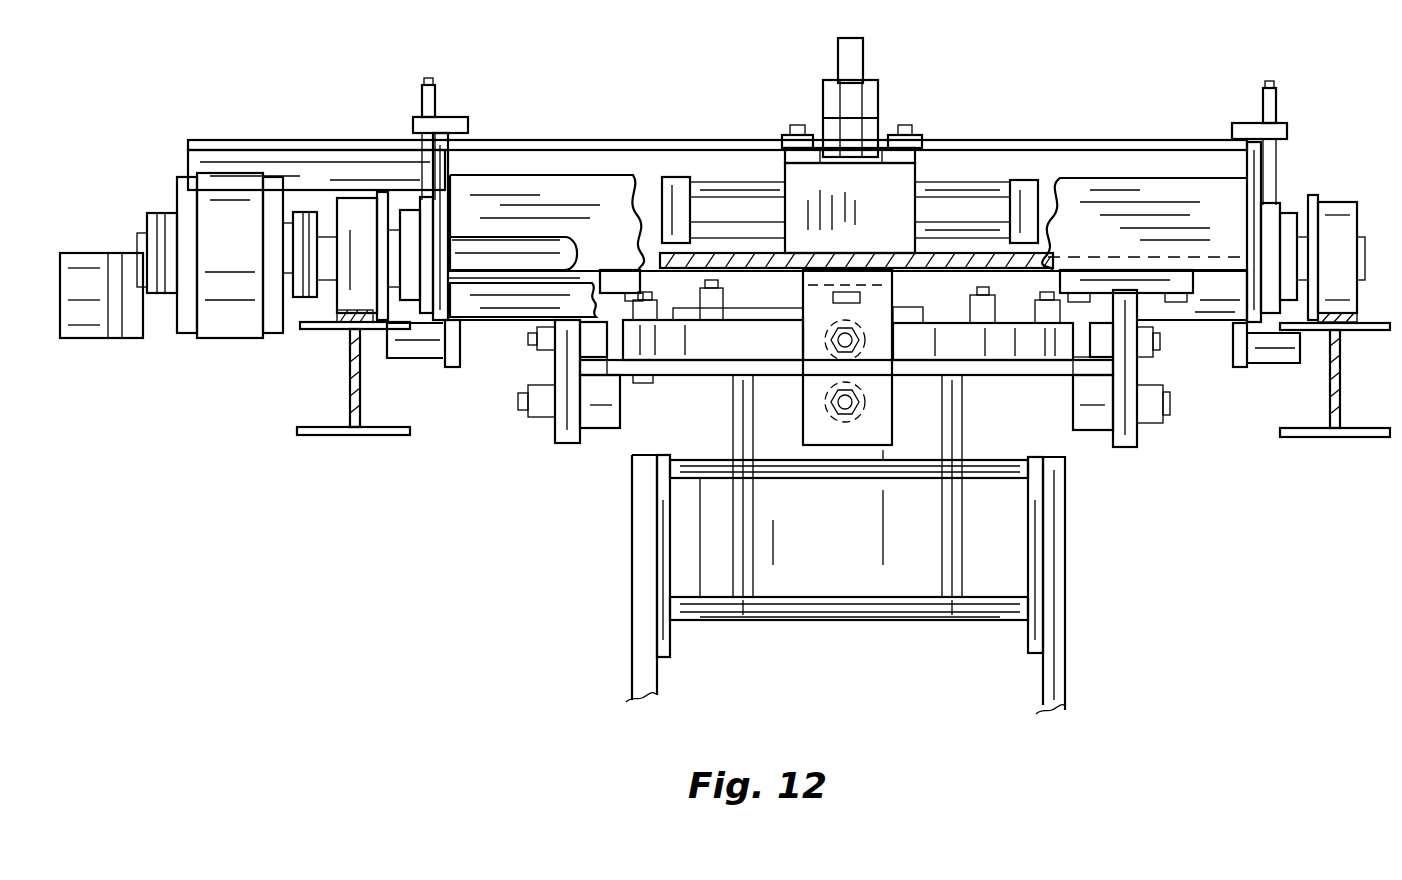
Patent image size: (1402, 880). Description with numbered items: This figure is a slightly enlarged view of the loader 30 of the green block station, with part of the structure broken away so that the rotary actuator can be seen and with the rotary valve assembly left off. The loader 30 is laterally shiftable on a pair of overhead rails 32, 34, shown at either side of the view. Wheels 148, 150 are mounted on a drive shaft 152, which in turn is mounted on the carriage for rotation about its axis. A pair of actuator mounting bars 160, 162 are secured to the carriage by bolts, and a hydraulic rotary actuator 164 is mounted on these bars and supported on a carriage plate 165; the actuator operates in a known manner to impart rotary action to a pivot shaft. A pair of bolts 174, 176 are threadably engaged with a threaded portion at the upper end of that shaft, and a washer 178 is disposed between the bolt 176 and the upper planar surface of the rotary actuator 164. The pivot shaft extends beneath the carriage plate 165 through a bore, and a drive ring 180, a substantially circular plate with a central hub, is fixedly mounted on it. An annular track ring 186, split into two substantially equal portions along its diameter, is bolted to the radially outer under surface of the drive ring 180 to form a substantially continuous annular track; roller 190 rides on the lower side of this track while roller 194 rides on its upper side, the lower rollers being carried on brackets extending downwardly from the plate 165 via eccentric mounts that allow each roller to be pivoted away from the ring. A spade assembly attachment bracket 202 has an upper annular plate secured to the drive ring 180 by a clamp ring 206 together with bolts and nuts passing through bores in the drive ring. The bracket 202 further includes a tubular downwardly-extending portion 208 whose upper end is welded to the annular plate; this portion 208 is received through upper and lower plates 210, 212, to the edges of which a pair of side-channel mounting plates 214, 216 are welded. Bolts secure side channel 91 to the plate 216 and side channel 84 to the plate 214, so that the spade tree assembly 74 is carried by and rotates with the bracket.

The loader 30 is at (1105, 550).
The overhead rail 32 is at (1340, 380).
The overhead rail 34 is at (347, 374).
The spade tree assembly 74 is at (1072, 640).
The side channel 84 is at (640, 631).
The side channel 91 is at (1053, 687).
The wheel 148 is at (1342, 210).
The wheel 150 is at (360, 248).
The drive shaft 152 is at (522, 247).
The actuator mounting bar 160 is at (920, 132).
The actuator mounting bar 162 is at (784, 136).
The hydraulic rotary actuator 164 is at (970, 201).
The carriage plate 165 is at (728, 258).
The bolt 174 is at (868, 88).
The bolt 176 is at (878, 132).
The washer 178 is at (862, 164).
The drive ring 180 is at (756, 326).
The annular track ring 186 is at (648, 381).
The roller 190 is at (866, 404).
The roller 194 is at (866, 342).
The spade assembly attachment bracket 202 is at (708, 632).
The clamp ring 206 is at (942, 314).
The tubular downwardly-extending portion 208 is at (860, 582).
The upper plate 210 is at (997, 478).
The lower plate 212 is at (990, 604).
The side-channel mounting plate 214 is at (668, 523).
The side-channel mounting plate 216 is at (1035, 532).